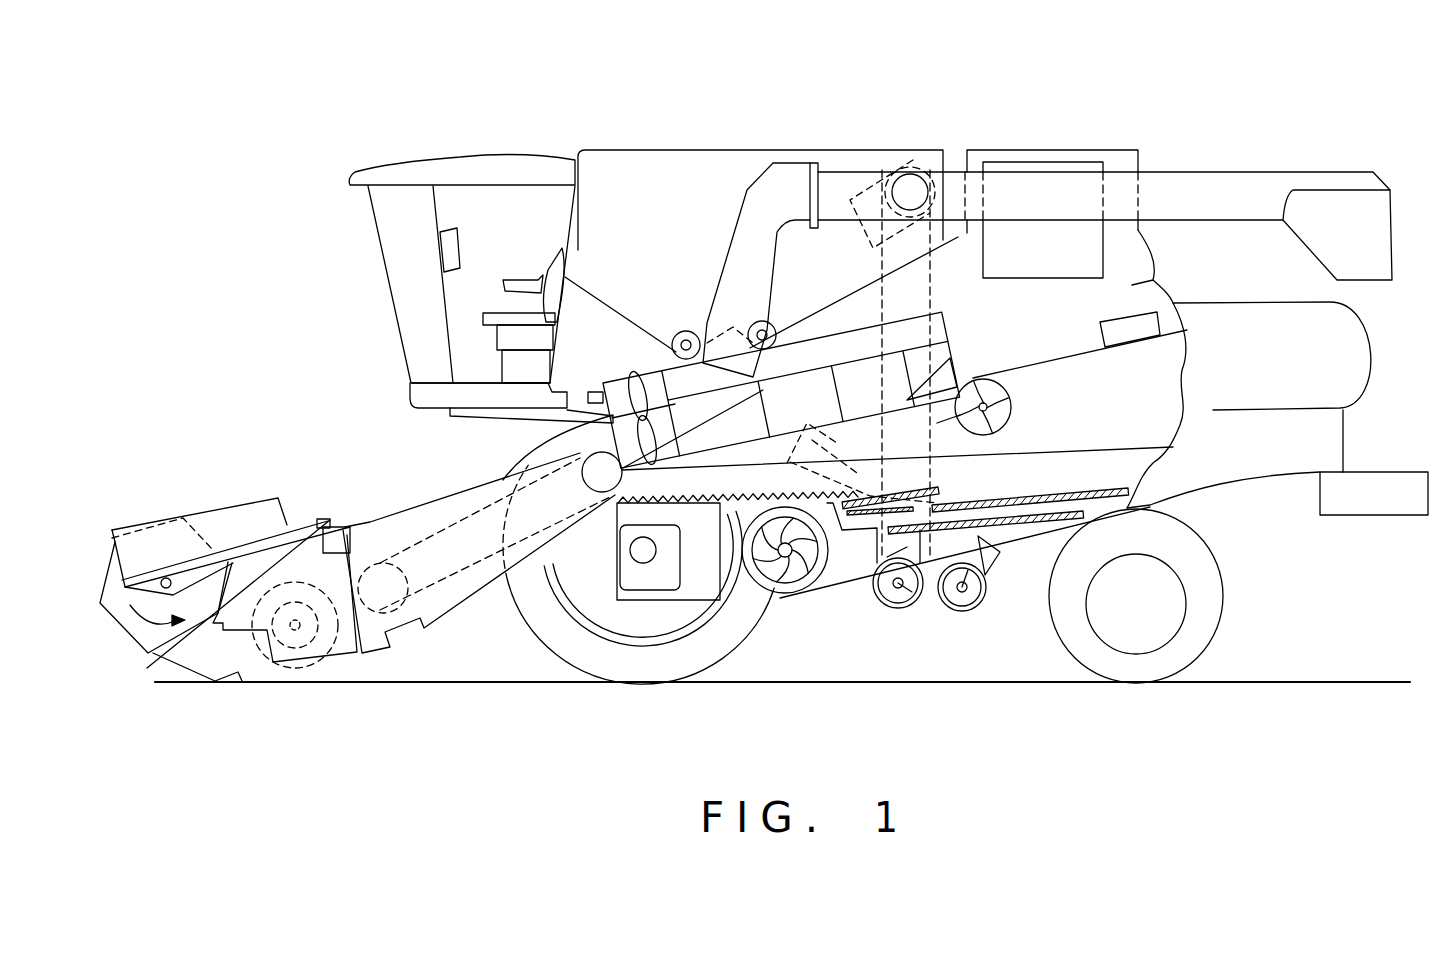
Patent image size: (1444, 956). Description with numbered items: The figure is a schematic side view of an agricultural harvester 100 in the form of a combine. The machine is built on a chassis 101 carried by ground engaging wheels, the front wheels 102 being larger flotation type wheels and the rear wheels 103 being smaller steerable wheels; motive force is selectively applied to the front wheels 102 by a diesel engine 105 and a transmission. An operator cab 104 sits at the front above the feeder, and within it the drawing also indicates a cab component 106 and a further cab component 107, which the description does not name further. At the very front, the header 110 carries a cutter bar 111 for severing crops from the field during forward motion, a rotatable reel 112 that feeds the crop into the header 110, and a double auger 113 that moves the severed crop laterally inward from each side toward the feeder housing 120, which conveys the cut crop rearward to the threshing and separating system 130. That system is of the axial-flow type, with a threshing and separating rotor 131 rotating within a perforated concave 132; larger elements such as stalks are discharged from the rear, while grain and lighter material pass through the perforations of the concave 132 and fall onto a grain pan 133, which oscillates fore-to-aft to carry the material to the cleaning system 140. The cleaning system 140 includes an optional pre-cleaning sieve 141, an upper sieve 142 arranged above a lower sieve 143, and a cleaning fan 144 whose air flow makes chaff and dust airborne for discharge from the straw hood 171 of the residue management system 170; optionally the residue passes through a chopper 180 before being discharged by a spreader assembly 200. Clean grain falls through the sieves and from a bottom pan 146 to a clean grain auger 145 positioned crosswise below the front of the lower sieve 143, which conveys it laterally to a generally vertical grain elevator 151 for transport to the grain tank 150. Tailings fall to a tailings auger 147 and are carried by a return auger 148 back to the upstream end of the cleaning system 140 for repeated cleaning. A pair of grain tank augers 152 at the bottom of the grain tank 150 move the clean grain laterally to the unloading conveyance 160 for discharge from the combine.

The agricultural harvester 100 is at (448, 127).
The chassis 101 is at (1150, 508).
The front wheels 102 is at (540, 630).
The rear wheels 103 is at (1217, 625).
The operator cab 104 is at (385, 284).
The diesel engine 105 is at (1032, 160).
The display device 106 is at (464, 212).
The cab pillar 107 is at (440, 253).
The header 110 is at (211, 581).
The cutter bar 111 is at (215, 690).
The rotatable reel 112 is at (105, 575).
The double auger 113 is at (295, 648).
The feeder housing 120 is at (428, 505).
The threshing and separating system 130 is at (731, 382).
The threshing and separating rotor 131 is at (625, 385).
The perforated concave 132 is at (820, 350).
The grain pan 133 is at (630, 503).
The cleaning system 140 is at (948, 594).
The pre-cleaning sieve 141 is at (950, 495).
The upper sieve 142 is at (1040, 495).
The lower sieve 143 is at (1013, 522).
The cleaning fan 144 is at (797, 600).
The clean grain auger 145 is at (908, 593).
The bottom pan 146 is at (1050, 538).
The tailings auger 147 is at (955, 610).
The return auger 148 is at (893, 490).
The grain tank 150 is at (633, 157).
The grain elevator 151 is at (945, 293).
The grain tank augers 152 is at (686, 330).
The unloading conveyance 160 is at (1240, 178).
The residue management system 170 is at (1332, 546).
The straw hood 171 is at (1355, 348).
The chopper 180 is at (1100, 335).
The spreader assembly 200 is at (1405, 455).